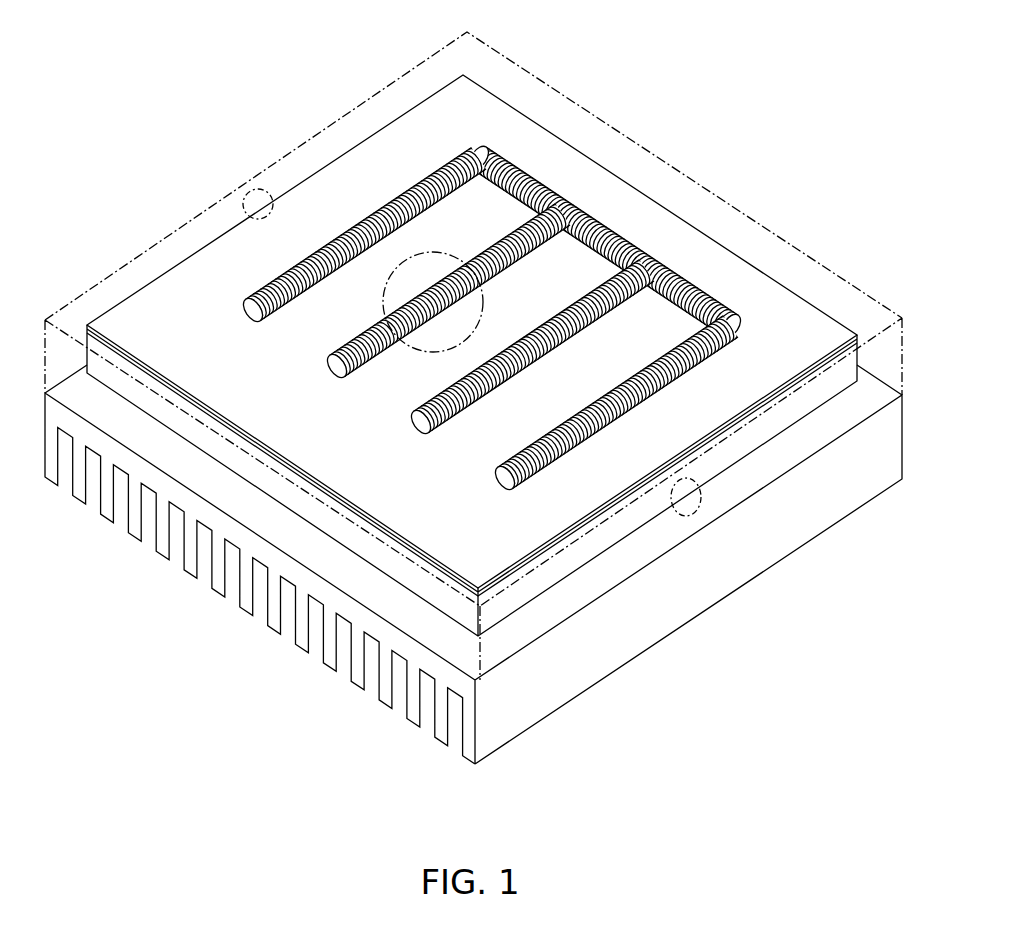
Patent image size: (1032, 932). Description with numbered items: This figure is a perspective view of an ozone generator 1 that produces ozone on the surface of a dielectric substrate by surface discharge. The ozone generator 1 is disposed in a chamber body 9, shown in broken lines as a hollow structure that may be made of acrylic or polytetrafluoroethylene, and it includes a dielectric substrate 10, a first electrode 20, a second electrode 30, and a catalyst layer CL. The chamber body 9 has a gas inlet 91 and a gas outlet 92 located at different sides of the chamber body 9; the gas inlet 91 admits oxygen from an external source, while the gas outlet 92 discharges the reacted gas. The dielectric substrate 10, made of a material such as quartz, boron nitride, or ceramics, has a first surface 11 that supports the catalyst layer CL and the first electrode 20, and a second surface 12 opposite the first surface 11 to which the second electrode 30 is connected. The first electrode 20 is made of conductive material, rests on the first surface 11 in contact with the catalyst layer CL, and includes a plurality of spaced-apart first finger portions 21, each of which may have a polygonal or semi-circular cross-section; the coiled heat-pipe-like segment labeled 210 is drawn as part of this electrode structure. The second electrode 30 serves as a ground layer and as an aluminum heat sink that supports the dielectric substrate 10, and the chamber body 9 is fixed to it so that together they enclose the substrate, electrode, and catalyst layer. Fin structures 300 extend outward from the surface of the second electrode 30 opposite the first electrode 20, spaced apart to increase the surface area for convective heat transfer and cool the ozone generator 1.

The ozone generator 1 is at (303, 156).
The chamber body 9 is at (143, 248).
The gas inlet 91 is at (248, 200).
The gas outlet 92 is at (693, 498).
The dielectric substrate 10 is at (625, 523).
The first surface 11 is at (768, 400).
The second surface 12 is at (762, 447).
The first electrode 20 is at (702, 293).
The first finger portions 21 is at (333, 375).
The heat pipe 210 is at (408, 186).
The second electrode 30 is at (622, 690).
The fin structures 300 is at (330, 682).
The catalyst layer CL is at (494, 130).